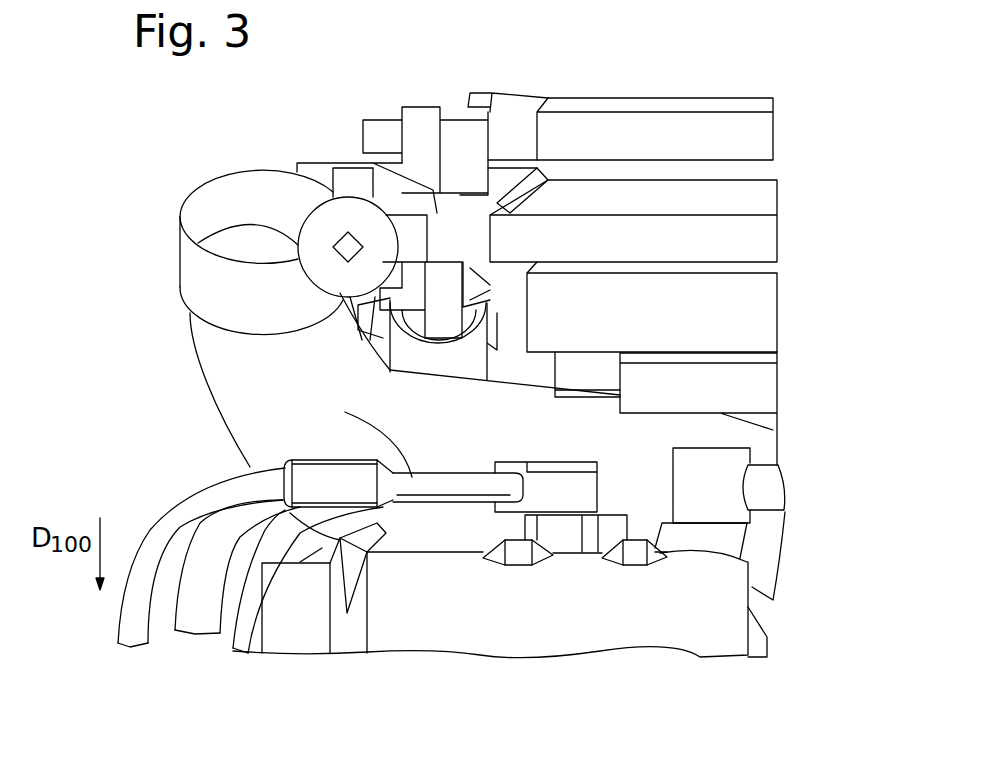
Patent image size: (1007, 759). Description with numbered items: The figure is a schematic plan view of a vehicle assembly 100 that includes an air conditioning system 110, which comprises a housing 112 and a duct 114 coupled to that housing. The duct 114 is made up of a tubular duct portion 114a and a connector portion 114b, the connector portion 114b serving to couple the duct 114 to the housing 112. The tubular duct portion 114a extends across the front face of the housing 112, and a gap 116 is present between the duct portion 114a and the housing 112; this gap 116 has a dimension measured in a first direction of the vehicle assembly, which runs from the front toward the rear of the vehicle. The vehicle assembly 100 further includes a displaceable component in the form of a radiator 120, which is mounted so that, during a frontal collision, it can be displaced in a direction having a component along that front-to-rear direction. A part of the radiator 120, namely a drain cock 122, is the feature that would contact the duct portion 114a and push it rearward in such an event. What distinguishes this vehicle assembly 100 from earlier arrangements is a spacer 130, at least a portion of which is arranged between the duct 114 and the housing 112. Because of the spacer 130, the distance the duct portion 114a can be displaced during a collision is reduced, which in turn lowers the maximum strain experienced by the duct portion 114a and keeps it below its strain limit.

The vehicle assembly 100 is at (730, 66).
The air conditioning system 110 is at (812, 446).
The housing 112 is at (692, 583).
The duct 114 is at (300, 465).
The tubular duct portion 114a is at (345, 412).
The connector portion 114b is at (578, 462).
The gap 116 is at (415, 505).
The radiator 120 is at (733, 227).
The drain cock 122 is at (348, 205).
The spacer 130 is at (412, 545).